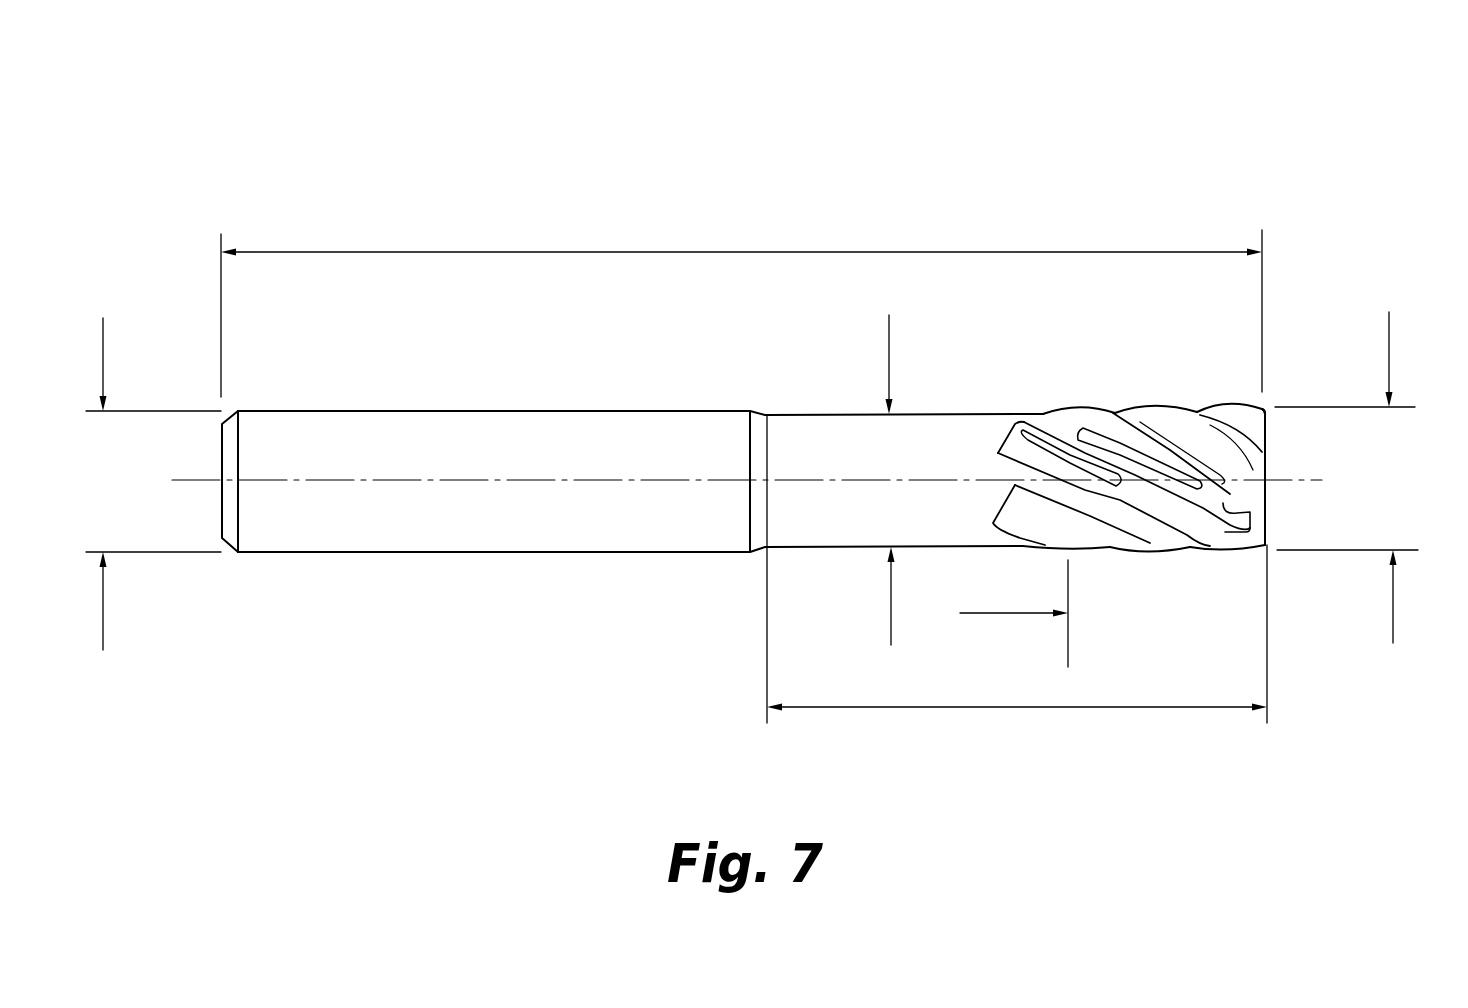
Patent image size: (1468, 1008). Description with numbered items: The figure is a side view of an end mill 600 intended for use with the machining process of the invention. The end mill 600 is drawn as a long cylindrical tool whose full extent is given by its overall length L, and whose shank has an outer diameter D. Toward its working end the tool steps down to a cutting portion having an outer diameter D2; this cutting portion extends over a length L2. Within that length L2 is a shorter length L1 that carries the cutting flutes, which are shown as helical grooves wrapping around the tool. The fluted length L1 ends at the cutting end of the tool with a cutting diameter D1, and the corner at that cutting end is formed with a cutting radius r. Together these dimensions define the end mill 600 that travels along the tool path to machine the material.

The end mill 600 is at (1135, 175).
The overall length L is at (741, 311).
The outer diameter D is at (153, 484).
The cutting diameter D1 is at (1346, 477).
The outer diameter of cutting portion D2 is at (912, 471).
The length with cutting flutes L1 is at (1055, 613).
The length of cutting portion L2 is at (1017, 569).
The cutting radius r is at (1275, 391).